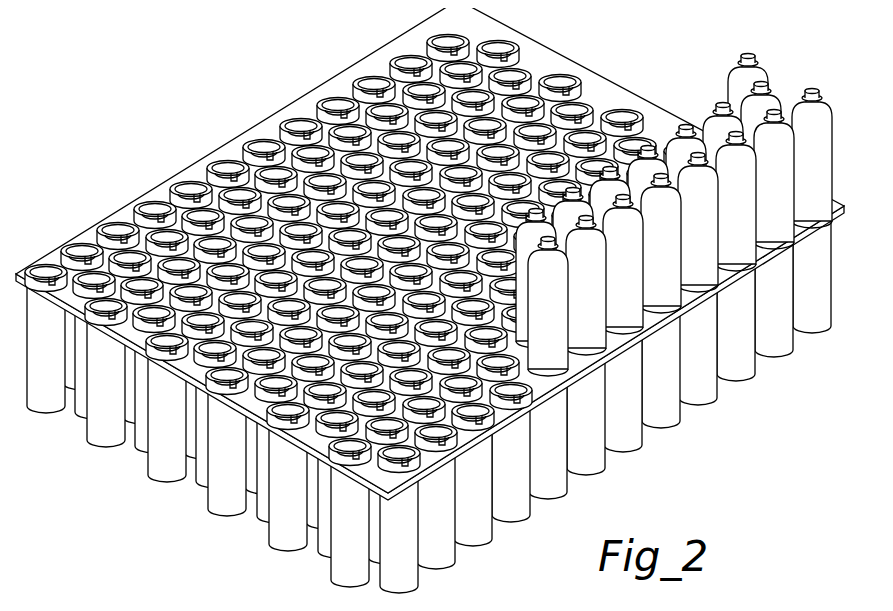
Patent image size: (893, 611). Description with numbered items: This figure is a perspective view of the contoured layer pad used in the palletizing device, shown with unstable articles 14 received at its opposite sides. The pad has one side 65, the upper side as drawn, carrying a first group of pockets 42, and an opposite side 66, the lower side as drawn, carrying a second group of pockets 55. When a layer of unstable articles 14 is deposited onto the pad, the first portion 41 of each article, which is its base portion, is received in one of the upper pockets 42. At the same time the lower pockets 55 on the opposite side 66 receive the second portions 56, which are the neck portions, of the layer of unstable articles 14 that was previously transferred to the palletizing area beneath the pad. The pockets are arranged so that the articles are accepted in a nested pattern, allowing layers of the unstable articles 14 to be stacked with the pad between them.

The unstable articles 14 is at (634, 396).
The first portion 41 is at (482, 505).
The pockets 42 is at (108, 212).
The pockets 55 is at (160, 443).
The second portions 56 is at (792, 36).
The one side 65 is at (230, 136).
The opposite side 66 is at (83, 404).